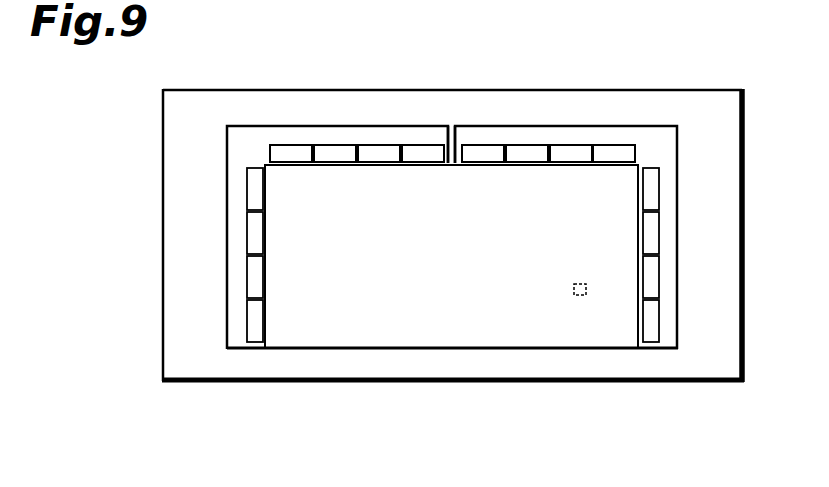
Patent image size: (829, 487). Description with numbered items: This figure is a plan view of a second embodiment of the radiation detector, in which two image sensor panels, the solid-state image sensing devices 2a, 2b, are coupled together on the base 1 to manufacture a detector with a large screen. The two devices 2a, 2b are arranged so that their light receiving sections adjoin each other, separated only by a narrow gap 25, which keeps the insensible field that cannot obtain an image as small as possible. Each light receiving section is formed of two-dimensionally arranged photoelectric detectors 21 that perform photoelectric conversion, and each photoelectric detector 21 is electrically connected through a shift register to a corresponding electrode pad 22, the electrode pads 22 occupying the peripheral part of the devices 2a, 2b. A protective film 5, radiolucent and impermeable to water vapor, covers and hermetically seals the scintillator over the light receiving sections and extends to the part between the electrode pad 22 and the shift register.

The base 1 is at (715, 203).
The solid-state image sensing device 2a is at (252, 145).
The solid-state image sensing device 2b is at (645, 140).
The gap 25 is at (451, 142).
The protective film 5 is at (457, 293).
The photoelectric detector 21 is at (647, 282).
The electrode pad 22 is at (578, 297).